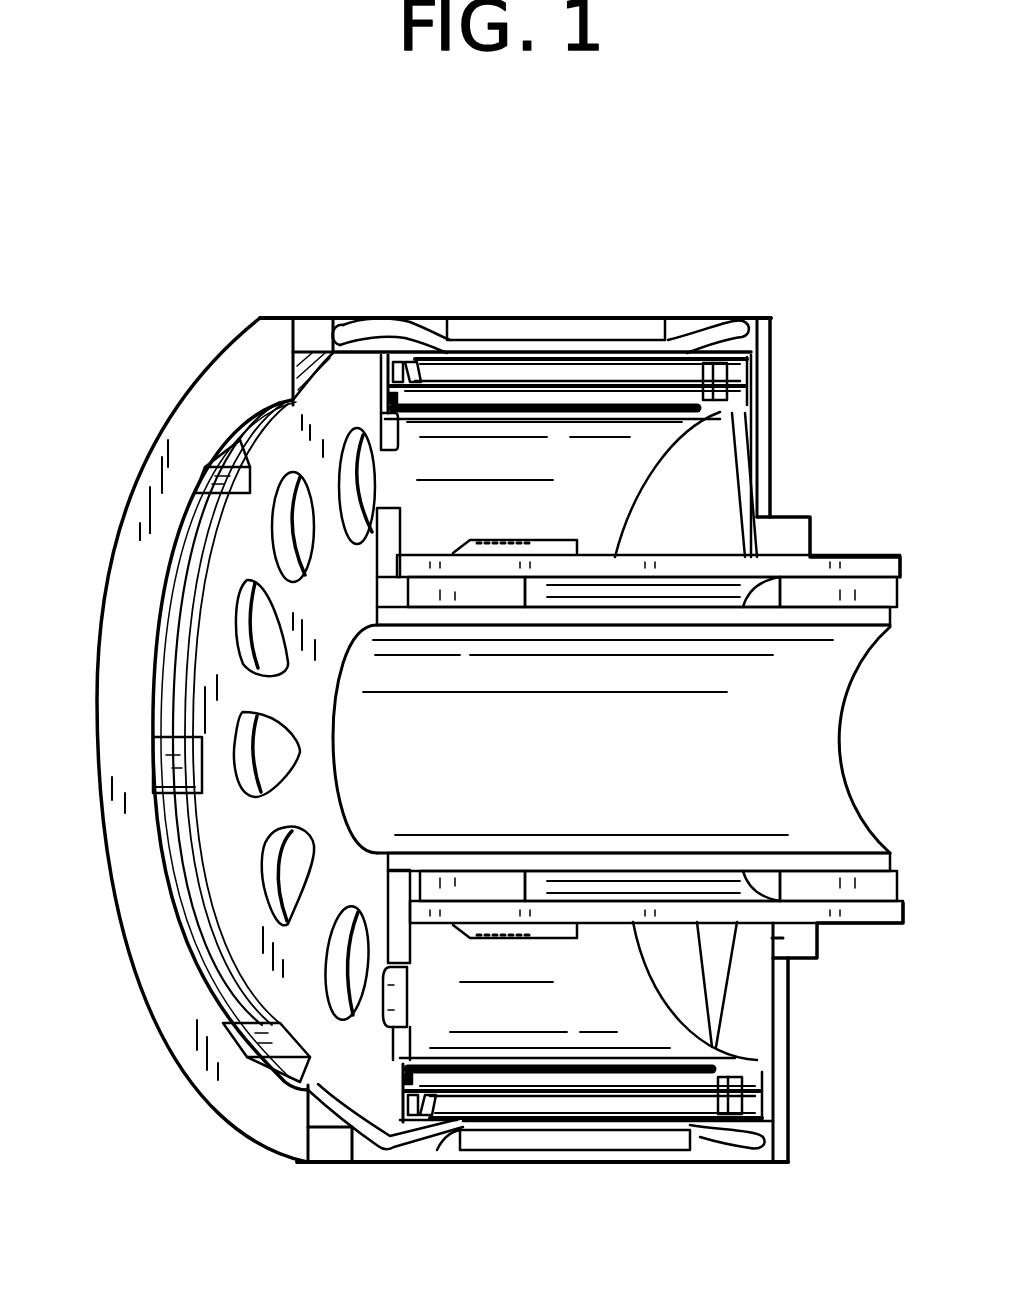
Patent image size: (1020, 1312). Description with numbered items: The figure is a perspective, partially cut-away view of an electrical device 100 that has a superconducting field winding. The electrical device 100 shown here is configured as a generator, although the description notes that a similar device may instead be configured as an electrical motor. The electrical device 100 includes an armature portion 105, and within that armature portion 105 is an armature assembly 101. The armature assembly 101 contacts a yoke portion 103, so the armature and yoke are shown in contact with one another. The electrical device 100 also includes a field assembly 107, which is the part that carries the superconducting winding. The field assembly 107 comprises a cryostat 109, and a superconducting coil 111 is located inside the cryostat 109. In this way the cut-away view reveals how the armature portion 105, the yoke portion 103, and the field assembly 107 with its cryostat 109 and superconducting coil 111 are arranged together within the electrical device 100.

The electrical device 100 is at (207, 190).
The armature assembly 101 is at (725, 318).
The yoke portion 103 is at (545, 318).
The armature portion 105 is at (239, 353).
The field assembly 107 is at (238, 548).
The cryostat 109 is at (498, 1030).
The superconducting coil 111 is at (663, 1103).